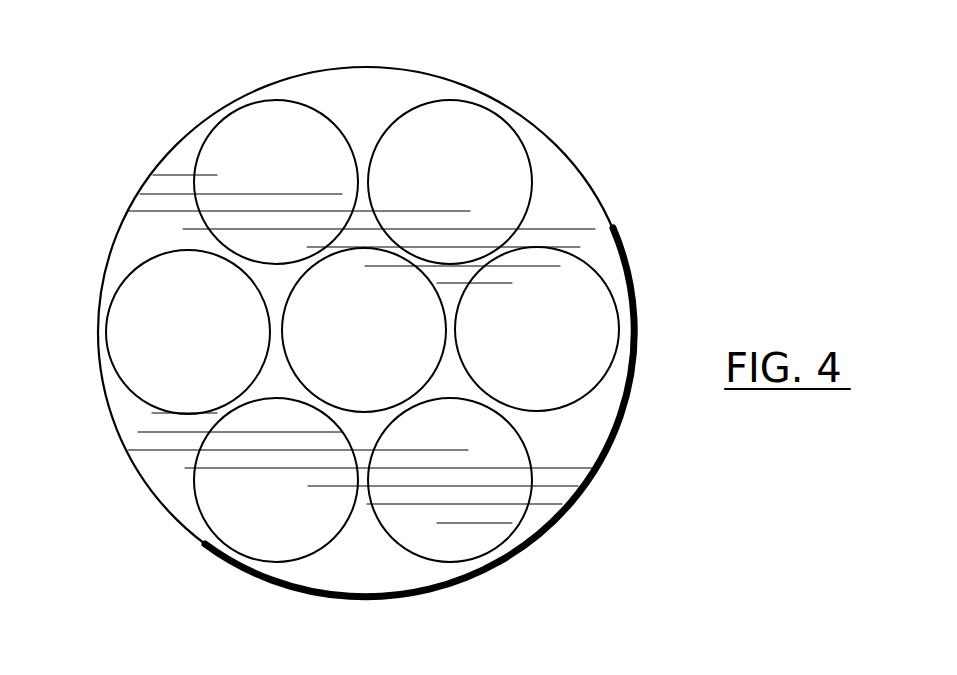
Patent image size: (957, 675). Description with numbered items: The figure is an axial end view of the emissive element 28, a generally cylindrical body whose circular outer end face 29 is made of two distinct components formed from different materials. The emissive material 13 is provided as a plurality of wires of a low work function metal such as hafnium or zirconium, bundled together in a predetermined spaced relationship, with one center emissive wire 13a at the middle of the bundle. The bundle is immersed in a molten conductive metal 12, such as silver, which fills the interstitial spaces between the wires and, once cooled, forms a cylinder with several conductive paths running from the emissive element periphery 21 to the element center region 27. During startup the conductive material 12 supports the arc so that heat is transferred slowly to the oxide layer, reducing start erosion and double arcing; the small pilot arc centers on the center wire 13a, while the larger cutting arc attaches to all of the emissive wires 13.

The conductive material 12 is at (379, 572).
The emissive material 13 is at (262, 160).
The center emissive wire 13a is at (320, 363).
The emissive element periphery 21 is at (397, 67).
The element center region 27 is at (347, 332).
The emissive element 28 is at (628, 150).
The outer end face 29 is at (597, 248).